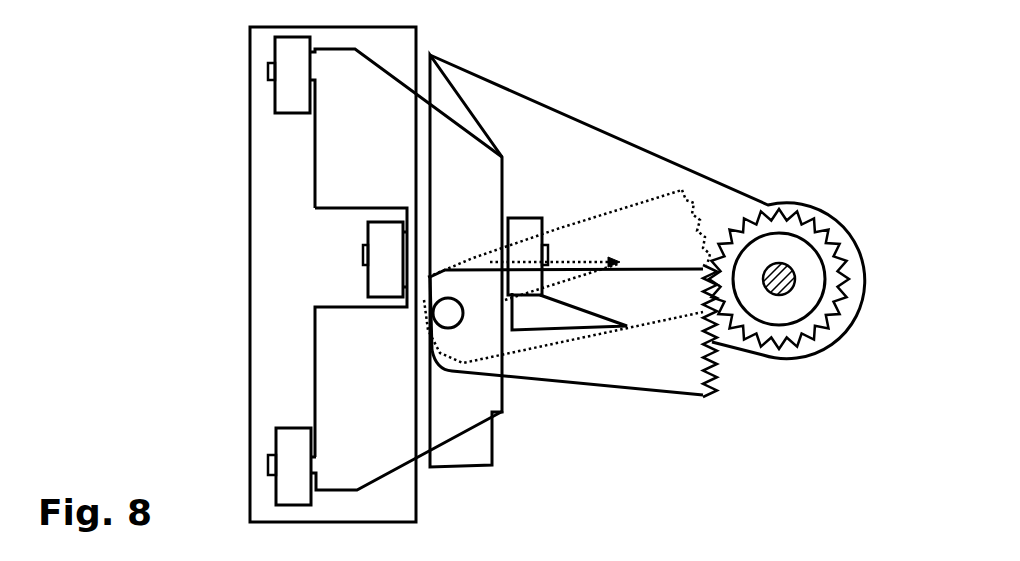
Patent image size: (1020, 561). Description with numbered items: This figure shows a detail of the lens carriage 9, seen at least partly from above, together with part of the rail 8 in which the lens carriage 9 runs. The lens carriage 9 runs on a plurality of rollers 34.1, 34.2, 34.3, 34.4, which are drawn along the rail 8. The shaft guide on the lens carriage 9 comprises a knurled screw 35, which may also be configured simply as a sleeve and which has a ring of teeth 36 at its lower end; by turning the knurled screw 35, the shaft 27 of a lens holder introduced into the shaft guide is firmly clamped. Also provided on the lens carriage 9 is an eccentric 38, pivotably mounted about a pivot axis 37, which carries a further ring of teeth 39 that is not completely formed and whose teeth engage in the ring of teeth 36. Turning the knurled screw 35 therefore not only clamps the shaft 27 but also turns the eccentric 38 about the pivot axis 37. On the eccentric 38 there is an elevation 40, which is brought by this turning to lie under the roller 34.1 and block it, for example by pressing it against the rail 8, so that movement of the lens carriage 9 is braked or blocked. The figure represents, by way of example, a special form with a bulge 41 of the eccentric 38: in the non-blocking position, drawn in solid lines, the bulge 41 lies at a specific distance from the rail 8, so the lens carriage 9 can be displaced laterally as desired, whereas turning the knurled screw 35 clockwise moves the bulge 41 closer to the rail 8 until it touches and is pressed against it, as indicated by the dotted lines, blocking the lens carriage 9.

The rail 8 is at (215, 293).
The lens carriage 9 is at (562, 427).
The shaft 27 is at (792, 268).
The roller 34.1 is at (530, 227).
The roller 34.2 is at (383, 258).
The roller 34.3 is at (282, 448).
The roller 34.4 is at (283, 95).
The knurled screw 35 is at (827, 283).
The ring of teeth 36 is at (793, 213).
The pivot axis 37 is at (449, 312).
The eccentric 38 is at (660, 393).
The further ring of teeth 39 is at (708, 368).
The elevation 40 is at (573, 325).
The bulge 41 is at (431, 276).